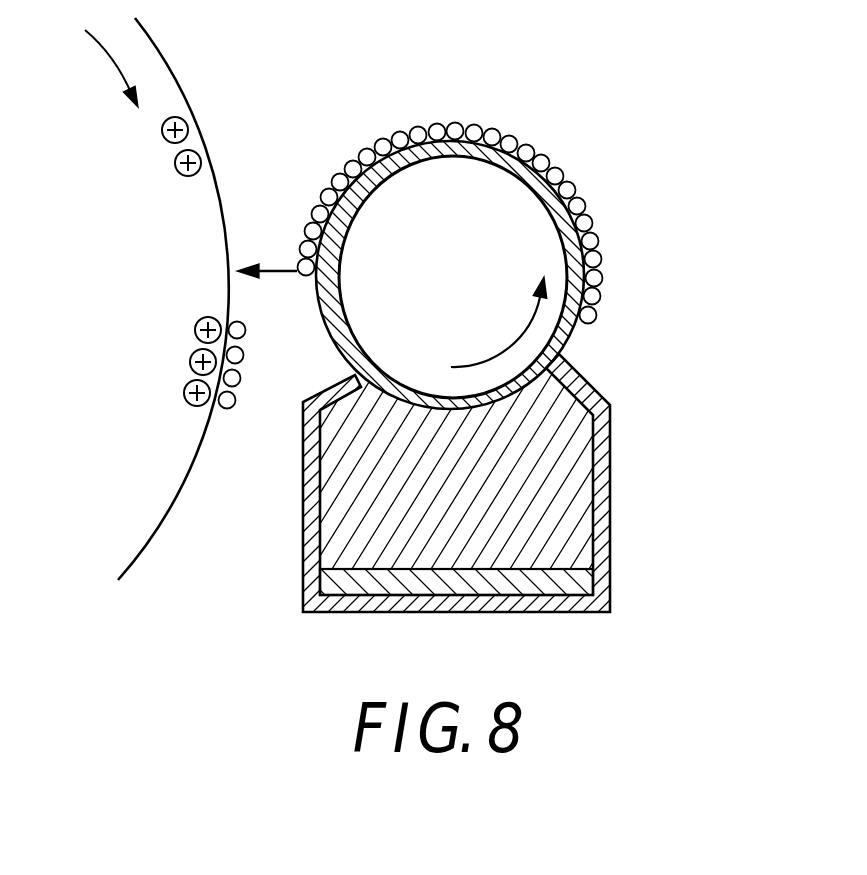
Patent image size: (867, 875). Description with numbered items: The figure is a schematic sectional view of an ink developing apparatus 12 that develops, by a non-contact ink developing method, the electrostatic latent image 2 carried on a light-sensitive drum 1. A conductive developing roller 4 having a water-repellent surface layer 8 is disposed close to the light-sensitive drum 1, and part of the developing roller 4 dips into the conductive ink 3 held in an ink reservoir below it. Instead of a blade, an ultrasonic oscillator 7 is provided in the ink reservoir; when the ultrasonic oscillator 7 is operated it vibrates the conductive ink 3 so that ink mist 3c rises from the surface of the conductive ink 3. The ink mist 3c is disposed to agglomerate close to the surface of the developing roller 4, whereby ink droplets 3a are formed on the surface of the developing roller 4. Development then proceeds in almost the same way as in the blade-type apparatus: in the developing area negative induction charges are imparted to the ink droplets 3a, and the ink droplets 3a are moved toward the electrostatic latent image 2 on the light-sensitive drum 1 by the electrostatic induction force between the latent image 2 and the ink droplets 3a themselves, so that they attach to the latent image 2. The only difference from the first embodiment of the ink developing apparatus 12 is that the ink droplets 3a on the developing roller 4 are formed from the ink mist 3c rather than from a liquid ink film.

The light-sensitive drum 1 is at (170, 65).
The electrostatic latent image 2 is at (160, 133).
The conductive ink 3 is at (558, 527).
The ink droplets 3a is at (525, 150).
The ink mist 3c is at (572, 443).
The developing roller 4 is at (402, 180).
The ultrasonic oscillator 7 is at (480, 585).
The water-repellent surface layer 8 is at (340, 333).
The ink developing apparatus 12 is at (618, 310).